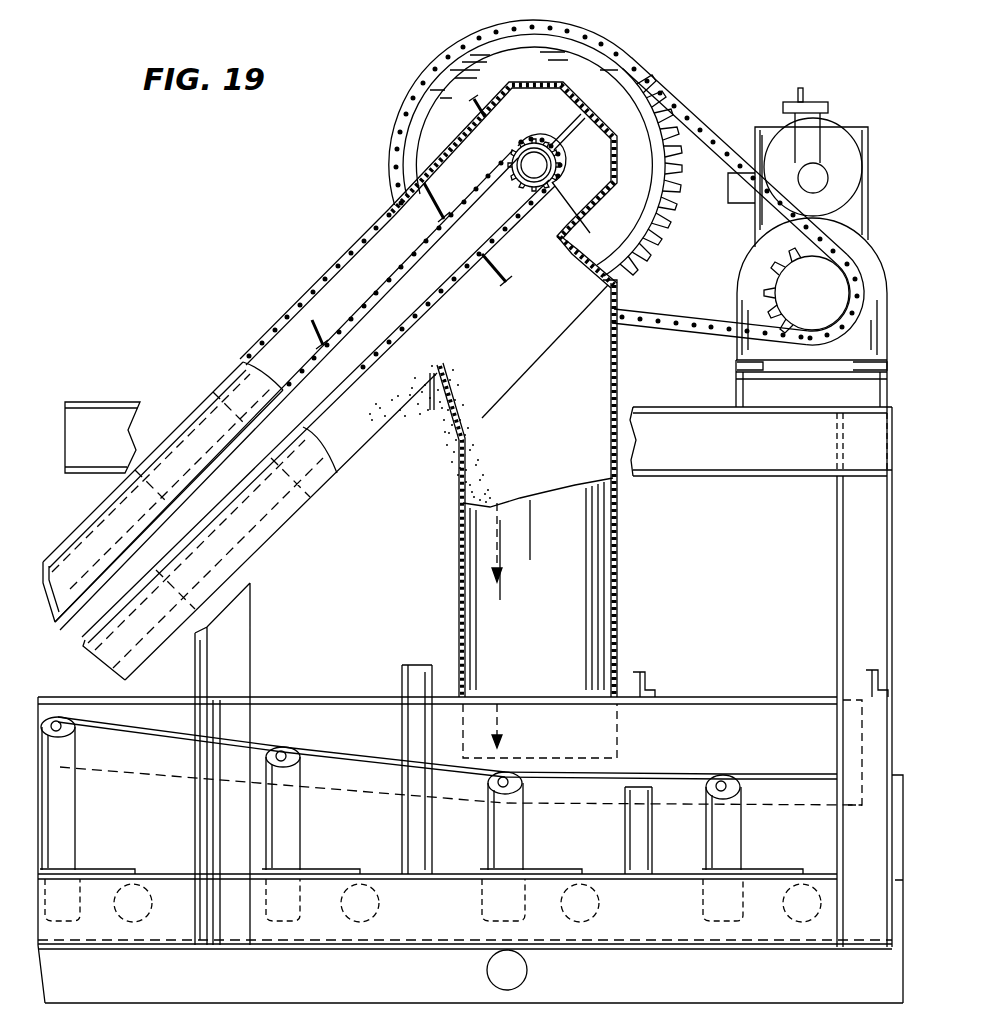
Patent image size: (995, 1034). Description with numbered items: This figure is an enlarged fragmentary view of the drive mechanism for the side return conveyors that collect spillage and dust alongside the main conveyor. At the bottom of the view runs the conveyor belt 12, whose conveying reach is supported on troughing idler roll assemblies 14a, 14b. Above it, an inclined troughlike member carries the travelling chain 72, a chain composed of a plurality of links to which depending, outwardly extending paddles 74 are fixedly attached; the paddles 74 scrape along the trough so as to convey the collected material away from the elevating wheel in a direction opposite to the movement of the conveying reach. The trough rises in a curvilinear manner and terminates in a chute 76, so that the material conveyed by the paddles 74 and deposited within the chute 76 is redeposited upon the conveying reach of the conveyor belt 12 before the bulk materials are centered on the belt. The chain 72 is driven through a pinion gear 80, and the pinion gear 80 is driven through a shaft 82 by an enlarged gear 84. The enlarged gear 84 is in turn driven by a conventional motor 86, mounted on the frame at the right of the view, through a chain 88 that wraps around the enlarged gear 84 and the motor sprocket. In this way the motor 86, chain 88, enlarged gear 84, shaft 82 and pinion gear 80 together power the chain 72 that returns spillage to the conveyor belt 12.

The conveyor belt 12 is at (333, 766).
The troughing idler roll assembly 14a is at (705, 823).
The troughing idler roll assembly 14b is at (283, 848).
The travelling chain 72 is at (383, 278).
The paddles 74 is at (500, 285).
The chute 76 is at (590, 395).
The pinion gear 80 is at (512, 188).
The shaft 82 is at (534, 160).
The enlarged gear 84 is at (592, 83).
The motor 86 is at (863, 260).
The chain 88 is at (707, 124).